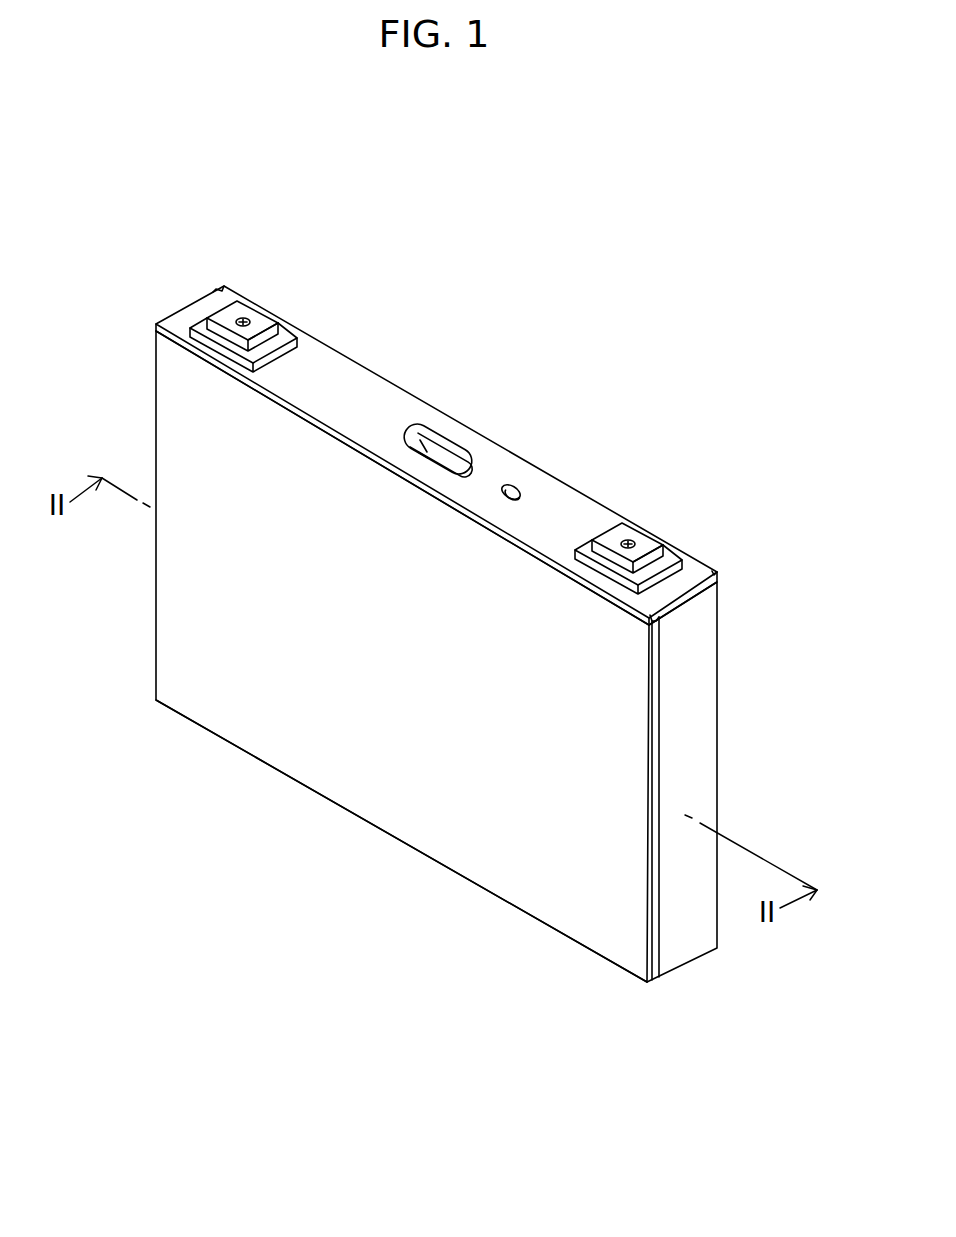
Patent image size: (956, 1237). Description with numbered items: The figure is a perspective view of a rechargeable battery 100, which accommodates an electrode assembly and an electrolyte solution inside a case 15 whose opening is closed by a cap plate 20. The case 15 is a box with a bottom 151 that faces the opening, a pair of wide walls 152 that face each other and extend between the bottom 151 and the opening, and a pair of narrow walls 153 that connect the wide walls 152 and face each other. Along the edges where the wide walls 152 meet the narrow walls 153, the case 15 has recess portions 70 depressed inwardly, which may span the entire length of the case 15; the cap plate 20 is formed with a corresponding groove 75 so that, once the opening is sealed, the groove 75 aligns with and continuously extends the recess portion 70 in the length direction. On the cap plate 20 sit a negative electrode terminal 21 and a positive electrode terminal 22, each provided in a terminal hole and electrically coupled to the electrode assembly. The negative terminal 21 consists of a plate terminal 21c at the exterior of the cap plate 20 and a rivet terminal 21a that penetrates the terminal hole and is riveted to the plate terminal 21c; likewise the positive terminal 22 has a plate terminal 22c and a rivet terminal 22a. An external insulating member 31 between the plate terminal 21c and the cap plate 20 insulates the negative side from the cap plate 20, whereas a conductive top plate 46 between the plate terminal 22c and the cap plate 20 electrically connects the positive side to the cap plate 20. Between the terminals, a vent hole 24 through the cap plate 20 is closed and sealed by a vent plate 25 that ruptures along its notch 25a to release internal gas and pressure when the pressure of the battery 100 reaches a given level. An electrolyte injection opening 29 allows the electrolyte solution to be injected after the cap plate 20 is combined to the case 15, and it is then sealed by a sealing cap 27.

The rechargeable battery 100 is at (490, 270).
The case 15 is at (345, 963).
The bottom 151 is at (458, 873).
The wide walls 152 is at (548, 886).
The narrow walls 153 is at (684, 903).
The cap plate 20 is at (357, 386).
The negative electrode terminal 21 is at (214, 309).
The rivet terminal 21a is at (245, 318).
The plate terminal 21c is at (264, 325).
The positive electrode terminal 22 is at (624, 526).
The rivet terminal 22a is at (630, 541).
The plate terminal 22c is at (658, 548).
The vent hole 24 is at (418, 440).
The vent plate 25 is at (445, 450).
The notch 25a is at (456, 460).
The sealing cap 27 is at (513, 485).
The electrolyte injection opening 29 is at (506, 495).
The external insulating member 31 is at (198, 323).
The conductive top plate 46 is at (670, 560).
The recess portion 70 is at (656, 680).
The groove 75 is at (656, 616).